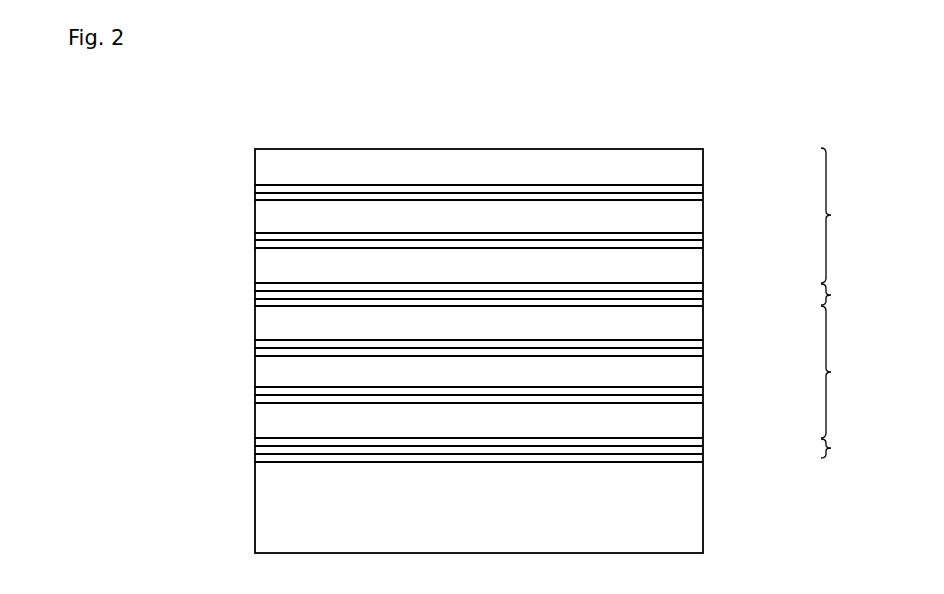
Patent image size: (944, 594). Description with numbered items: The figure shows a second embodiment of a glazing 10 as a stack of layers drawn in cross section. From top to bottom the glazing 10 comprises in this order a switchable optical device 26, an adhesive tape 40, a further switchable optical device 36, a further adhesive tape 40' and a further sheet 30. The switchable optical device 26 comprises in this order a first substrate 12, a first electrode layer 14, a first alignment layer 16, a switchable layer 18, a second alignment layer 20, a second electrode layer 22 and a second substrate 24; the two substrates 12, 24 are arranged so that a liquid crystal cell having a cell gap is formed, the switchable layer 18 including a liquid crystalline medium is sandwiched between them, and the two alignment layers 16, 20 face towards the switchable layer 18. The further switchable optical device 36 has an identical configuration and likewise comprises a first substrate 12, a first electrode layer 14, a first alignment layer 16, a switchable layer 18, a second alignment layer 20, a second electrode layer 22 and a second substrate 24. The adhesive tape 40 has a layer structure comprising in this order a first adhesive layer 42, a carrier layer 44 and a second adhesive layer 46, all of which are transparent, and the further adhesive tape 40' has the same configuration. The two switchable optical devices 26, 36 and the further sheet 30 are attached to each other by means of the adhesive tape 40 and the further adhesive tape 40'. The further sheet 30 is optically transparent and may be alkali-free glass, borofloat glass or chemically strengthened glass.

The glazing 10 is at (411, 111).
The first substrate 12 is at (680, 168).
The first electrode layer 14 is at (260, 188).
The first alignment layer 16 is at (683, 197).
The switchable layer 18 is at (265, 222).
The second alignment layer 20 is at (690, 237).
The second electrode layer 22 is at (263, 243).
The second substrate 24 is at (687, 275).
The switchable optical device 26 is at (846, 215).
The further sheet 30 is at (672, 500).
The further switchable optical device 36 is at (846, 372).
The adhesive tape 40 is at (846, 295).
The further adhesive tape 40' is at (850, 448).
The first adhesive layer 42 is at (258, 287).
The carrier layer 44 is at (667, 295).
The second adhesive layer 46 is at (258, 302).